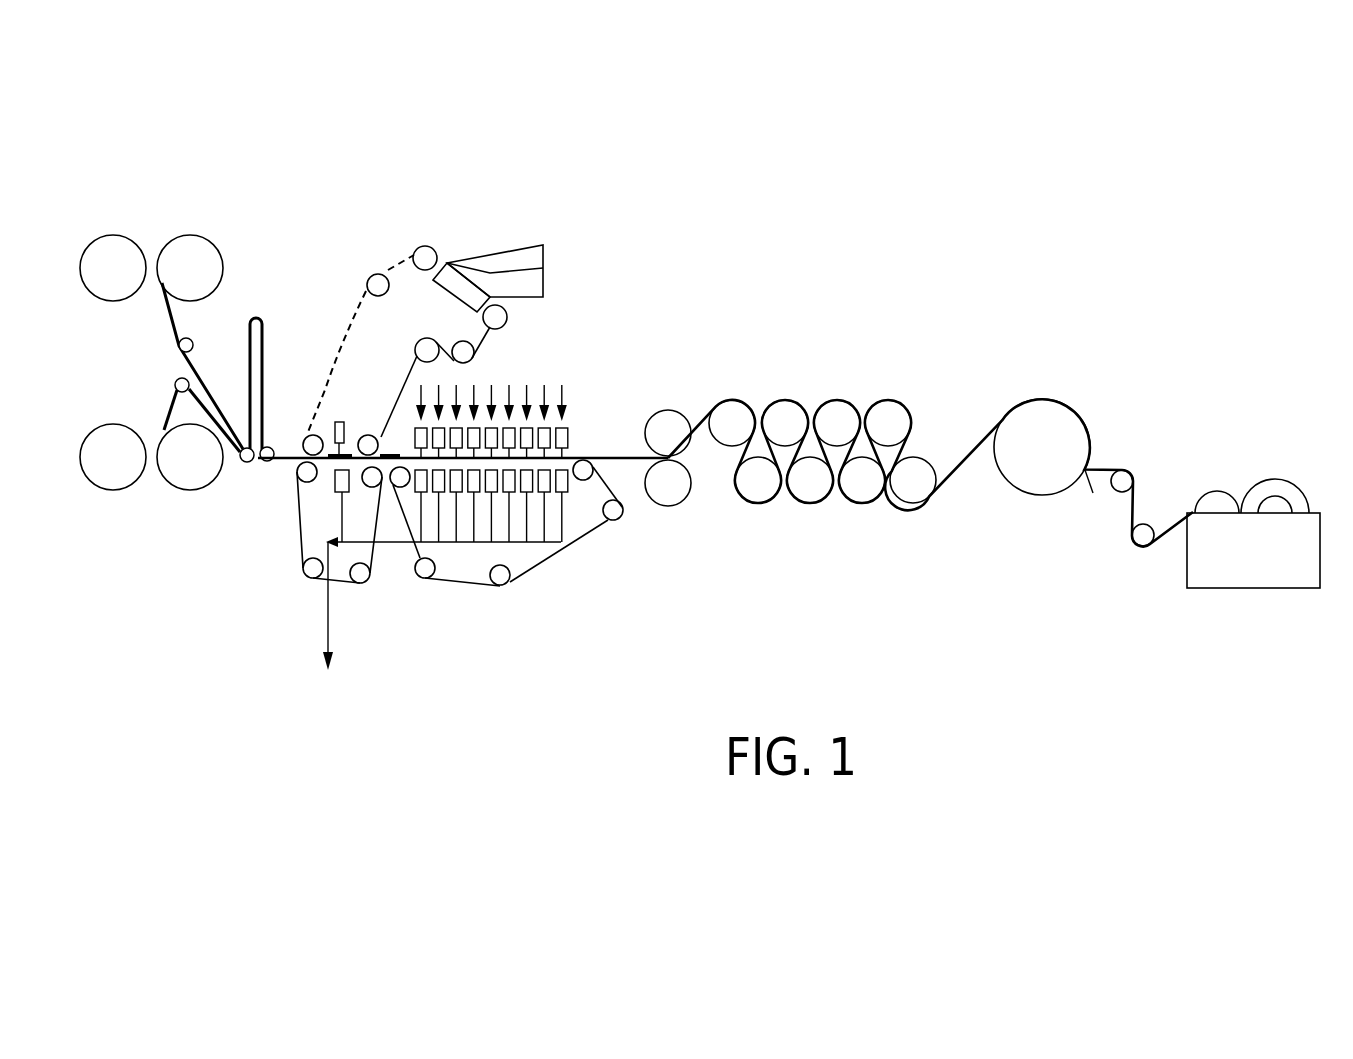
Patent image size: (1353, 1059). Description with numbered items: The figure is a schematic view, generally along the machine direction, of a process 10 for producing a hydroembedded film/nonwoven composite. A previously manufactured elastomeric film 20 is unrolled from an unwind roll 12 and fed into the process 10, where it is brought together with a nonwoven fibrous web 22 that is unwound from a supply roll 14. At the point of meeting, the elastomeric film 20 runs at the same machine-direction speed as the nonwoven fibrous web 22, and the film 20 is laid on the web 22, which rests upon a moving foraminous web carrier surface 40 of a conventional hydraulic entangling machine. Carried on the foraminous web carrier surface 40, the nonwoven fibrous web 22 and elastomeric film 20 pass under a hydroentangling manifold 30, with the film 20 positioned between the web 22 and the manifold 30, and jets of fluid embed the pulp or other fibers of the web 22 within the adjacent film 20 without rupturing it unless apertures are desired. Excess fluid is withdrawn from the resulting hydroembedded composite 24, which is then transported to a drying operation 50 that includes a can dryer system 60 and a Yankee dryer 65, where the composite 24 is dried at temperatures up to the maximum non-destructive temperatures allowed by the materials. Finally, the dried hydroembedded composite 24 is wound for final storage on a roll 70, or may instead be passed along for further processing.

The process 10 is at (369, 98).
The unwind roll 12 is at (193, 235).
The supply roll 14 is at (195, 489).
The elastomeric film 20 is at (167, 313).
The nonwoven fibrous web 22 is at (163, 418).
The hydroembedded composite 24 is at (603, 458).
The hydroentangling manifold 30 is at (583, 366).
The foraminous web carrier surface 40 is at (572, 548).
The drying operation 50 is at (955, 275).
The can dryer system 60 is at (817, 368).
The Yankee dryer 65 is at (1043, 398).
The roll 70 is at (1272, 479).